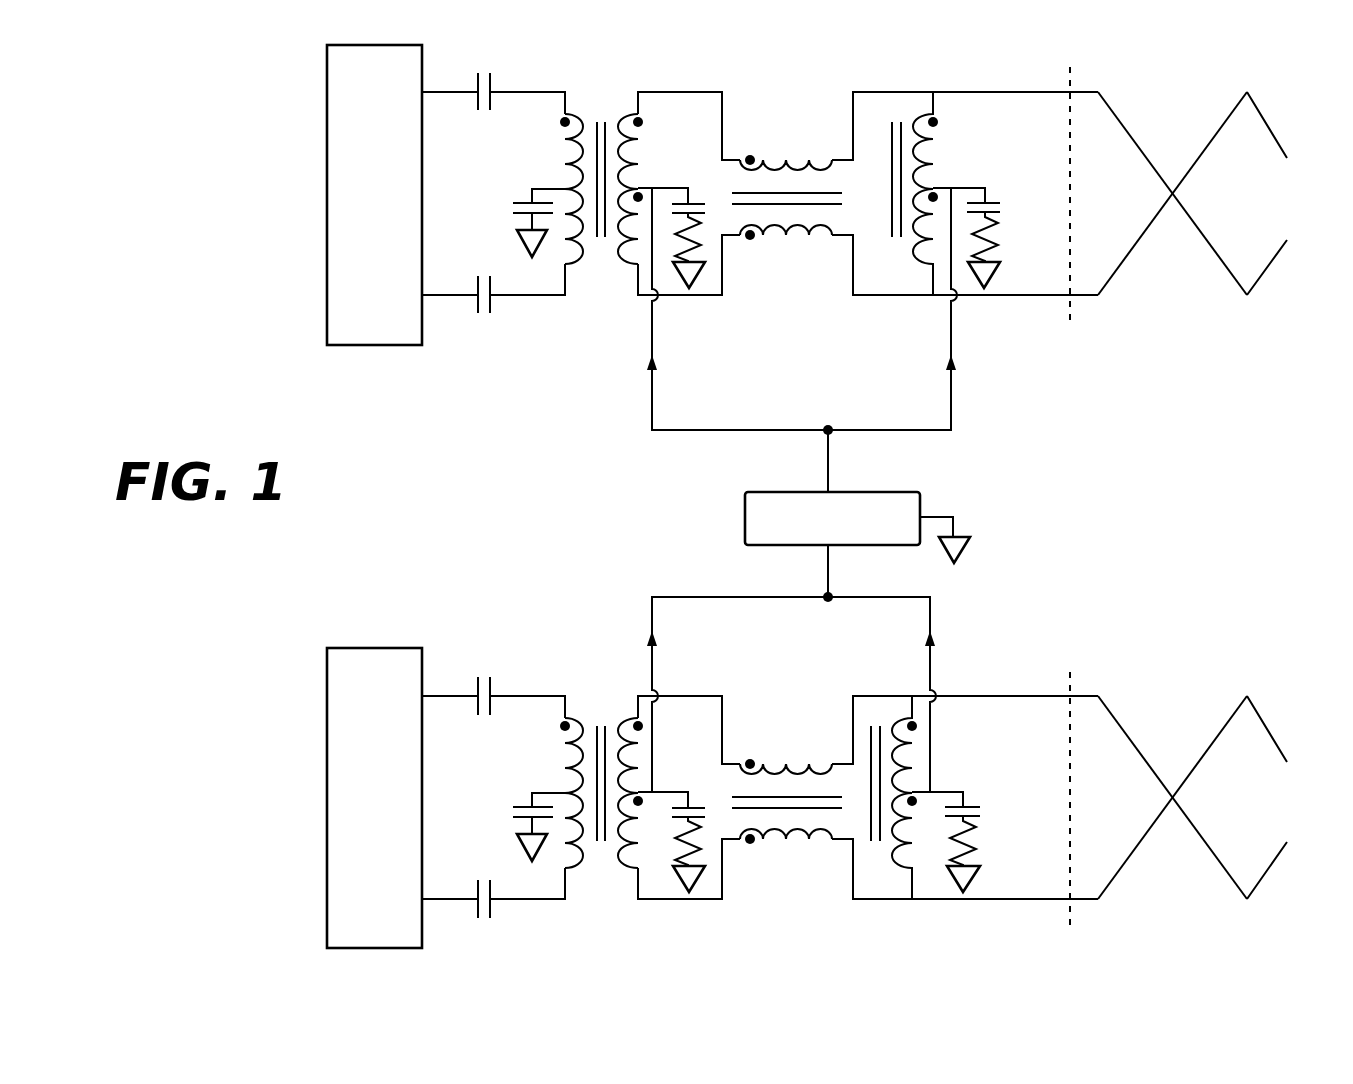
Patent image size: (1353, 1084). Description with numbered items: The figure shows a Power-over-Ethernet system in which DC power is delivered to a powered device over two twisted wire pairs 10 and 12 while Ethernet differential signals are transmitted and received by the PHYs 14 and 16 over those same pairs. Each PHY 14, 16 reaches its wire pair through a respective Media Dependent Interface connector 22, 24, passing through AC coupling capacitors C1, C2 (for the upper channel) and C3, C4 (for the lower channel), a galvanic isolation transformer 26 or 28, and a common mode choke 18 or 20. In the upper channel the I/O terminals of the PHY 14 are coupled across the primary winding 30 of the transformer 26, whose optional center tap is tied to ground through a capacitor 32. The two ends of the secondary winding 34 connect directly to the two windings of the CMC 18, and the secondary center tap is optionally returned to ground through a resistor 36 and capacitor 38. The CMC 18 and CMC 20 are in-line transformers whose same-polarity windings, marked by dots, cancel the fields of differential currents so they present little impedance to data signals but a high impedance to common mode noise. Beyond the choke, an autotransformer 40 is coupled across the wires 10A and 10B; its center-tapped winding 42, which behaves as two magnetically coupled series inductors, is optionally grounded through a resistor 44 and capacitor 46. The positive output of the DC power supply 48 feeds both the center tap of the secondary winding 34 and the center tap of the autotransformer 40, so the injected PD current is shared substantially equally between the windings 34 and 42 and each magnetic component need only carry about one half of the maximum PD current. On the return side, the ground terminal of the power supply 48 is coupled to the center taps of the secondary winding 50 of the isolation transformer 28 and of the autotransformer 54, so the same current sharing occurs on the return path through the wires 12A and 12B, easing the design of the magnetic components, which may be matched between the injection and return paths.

The wire pair 10 is at (1192, 191).
The wire 10A is at (1135, 143).
The wire 10B is at (1135, 248).
The wire pair 12 is at (1192, 796).
The wire 12A is at (1135, 746).
The wire 12B is at (1135, 848).
The PHY 14 is at (327, 151).
The PHY 16 is at (327, 756).
The CMC 18 is at (793, 160).
The CMC 20 is at (793, 764).
The MDI connector 22 is at (1072, 91).
The MDI connector 24 is at (1072, 695).
The isolation transformer 26 is at (601, 118).
The isolation transformer 28 is at (601, 722).
The primary winding 30 is at (560, 146).
The capacitor 32 is at (528, 203).
The secondary winding 34 is at (634, 166).
The resistor 36 is at (693, 245).
The capacitor 38 is at (707, 210).
The autotransformer 40 is at (890, 142).
The autotransformer winding 42 is at (925, 150).
The resistor 44 is at (995, 236).
The capacitor 46 is at (1000, 210).
The DC power supply 48 is at (745, 512).
The secondary winding 50 is at (640, 848).
The autotransformer 54 is at (870, 748).
The AC coupling capacitor C1 is at (492, 84).
The AC coupling capacitor C2 is at (492, 302).
The AC coupling capacitor C3 is at (492, 688).
The AC coupling capacitor C4 is at (492, 906).